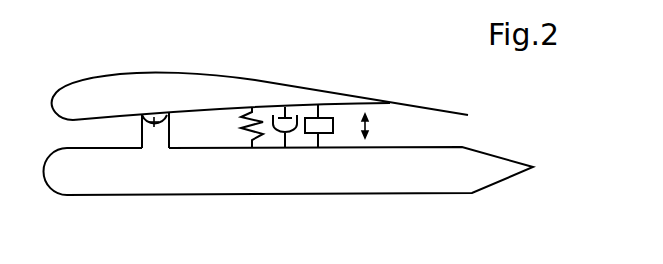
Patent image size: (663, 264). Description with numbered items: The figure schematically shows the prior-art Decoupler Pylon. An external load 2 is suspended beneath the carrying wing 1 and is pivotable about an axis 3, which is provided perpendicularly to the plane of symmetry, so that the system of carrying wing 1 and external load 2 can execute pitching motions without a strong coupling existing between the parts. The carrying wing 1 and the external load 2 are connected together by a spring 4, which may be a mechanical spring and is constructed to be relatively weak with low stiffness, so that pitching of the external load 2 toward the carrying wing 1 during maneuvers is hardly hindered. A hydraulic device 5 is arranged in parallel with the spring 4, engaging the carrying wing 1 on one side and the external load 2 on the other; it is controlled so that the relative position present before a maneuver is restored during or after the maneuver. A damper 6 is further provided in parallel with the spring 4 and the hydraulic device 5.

The carrying wing 1 is at (98, 98).
The external load 2 is at (427, 173).
The axis 3 is at (153, 115).
The spring 4 is at (249, 113).
The hydraulic device 5 is at (317, 125).
The damper 6 is at (283, 113).